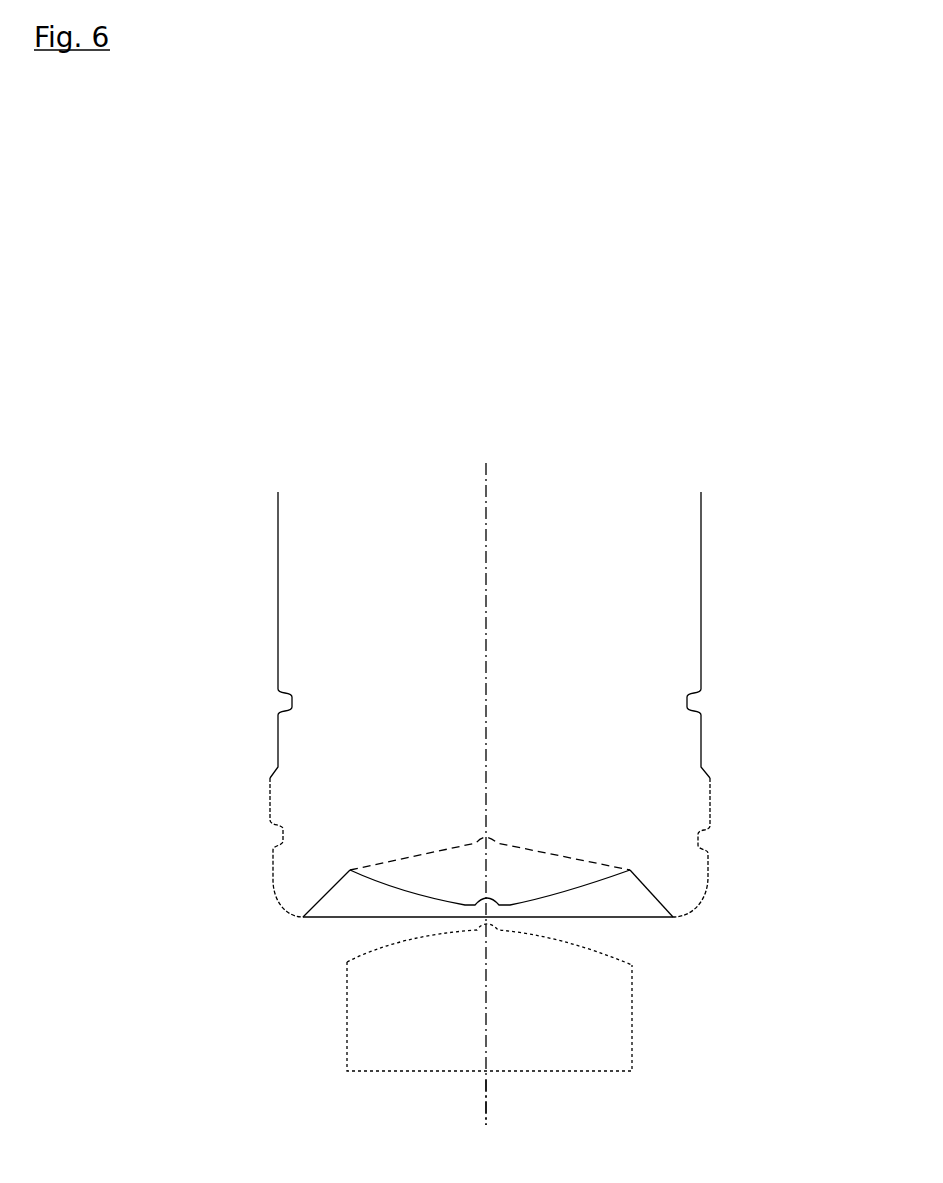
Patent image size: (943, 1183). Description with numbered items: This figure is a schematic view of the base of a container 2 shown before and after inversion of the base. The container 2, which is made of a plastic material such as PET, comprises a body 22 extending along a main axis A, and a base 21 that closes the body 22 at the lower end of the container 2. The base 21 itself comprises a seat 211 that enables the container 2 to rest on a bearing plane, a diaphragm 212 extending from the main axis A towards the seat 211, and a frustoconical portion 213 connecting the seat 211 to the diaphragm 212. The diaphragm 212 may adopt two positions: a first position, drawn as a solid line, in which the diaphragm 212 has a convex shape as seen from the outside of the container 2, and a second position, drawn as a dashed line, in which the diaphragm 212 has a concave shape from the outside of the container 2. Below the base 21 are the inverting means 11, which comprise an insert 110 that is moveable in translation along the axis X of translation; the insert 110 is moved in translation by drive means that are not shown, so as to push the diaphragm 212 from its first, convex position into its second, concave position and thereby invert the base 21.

The container 2 is at (577, 422).
The body 22 is at (745, 517).
The base 21 is at (250, 882).
The seat 211 is at (677, 922).
The diaphragm 212 is at (378, 890).
The frustoconical portion 213 is at (650, 880).
The inverting means 11 is at (319, 1045).
The insert 110 is at (603, 1013).
The main axis A is at (485, 521).
The axis of translation X is at (485, 1095).